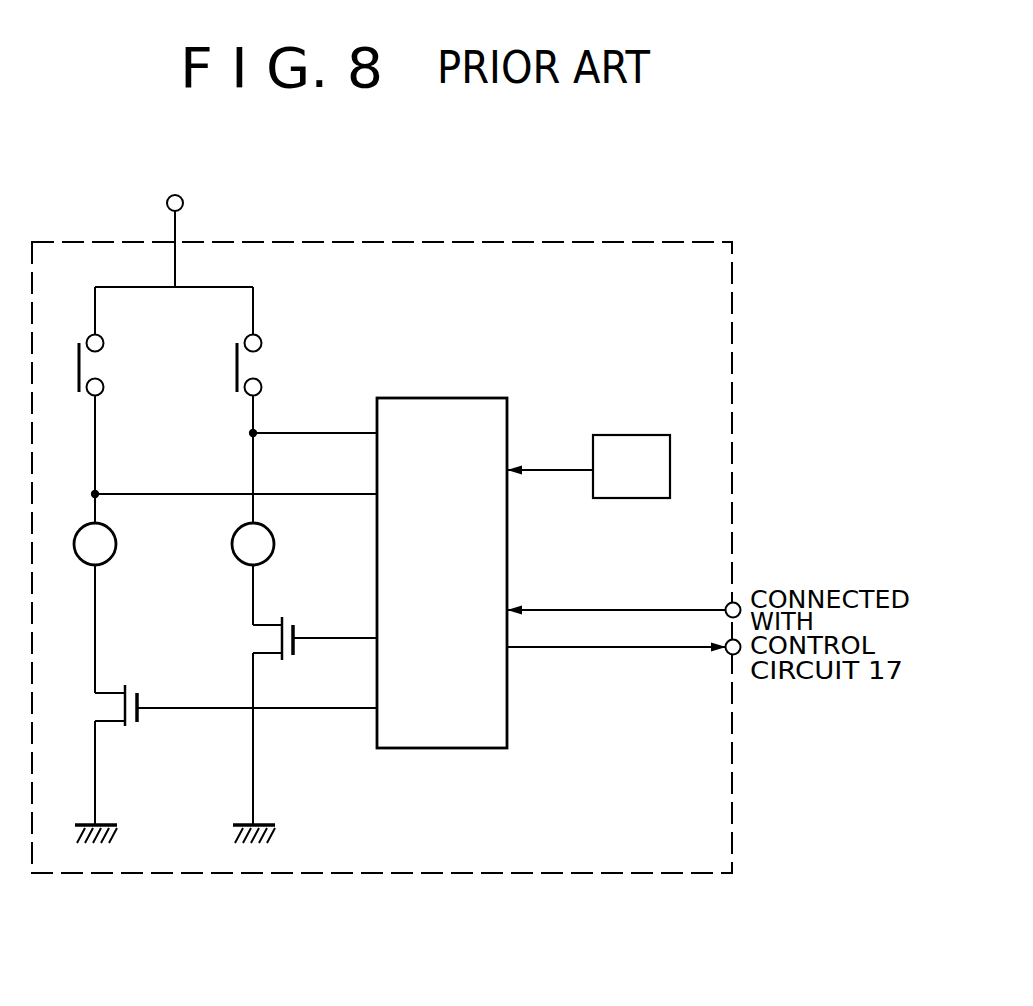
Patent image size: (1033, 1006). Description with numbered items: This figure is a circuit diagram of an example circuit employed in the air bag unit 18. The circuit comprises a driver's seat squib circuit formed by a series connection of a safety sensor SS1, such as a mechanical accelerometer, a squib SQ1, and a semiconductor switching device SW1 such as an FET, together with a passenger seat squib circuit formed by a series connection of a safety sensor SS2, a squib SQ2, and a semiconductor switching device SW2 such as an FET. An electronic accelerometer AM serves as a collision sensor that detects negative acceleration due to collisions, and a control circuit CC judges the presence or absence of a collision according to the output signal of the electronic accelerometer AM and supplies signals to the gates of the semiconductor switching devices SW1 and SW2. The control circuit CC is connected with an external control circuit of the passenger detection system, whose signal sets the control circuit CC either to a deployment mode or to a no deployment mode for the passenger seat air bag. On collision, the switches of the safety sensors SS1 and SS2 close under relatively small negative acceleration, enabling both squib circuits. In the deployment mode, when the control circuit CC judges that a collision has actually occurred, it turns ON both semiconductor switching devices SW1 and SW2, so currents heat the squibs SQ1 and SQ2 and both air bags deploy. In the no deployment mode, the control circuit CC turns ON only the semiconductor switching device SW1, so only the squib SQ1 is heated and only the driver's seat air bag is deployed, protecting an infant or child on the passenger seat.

The air bag unit 18 is at (490, 242).
The safety sensor SS1 is at (99, 365).
The safety sensor SS2 is at (257, 365).
The squib SQ1 is at (117, 543).
The squib SQ2 is at (275, 543).
The semiconductor switching device SW1 is at (125, 727).
The semiconductor switching device SW2 is at (268, 636).
The control circuit CC is at (432, 398).
The electronic accelerometer AM is at (628, 435).